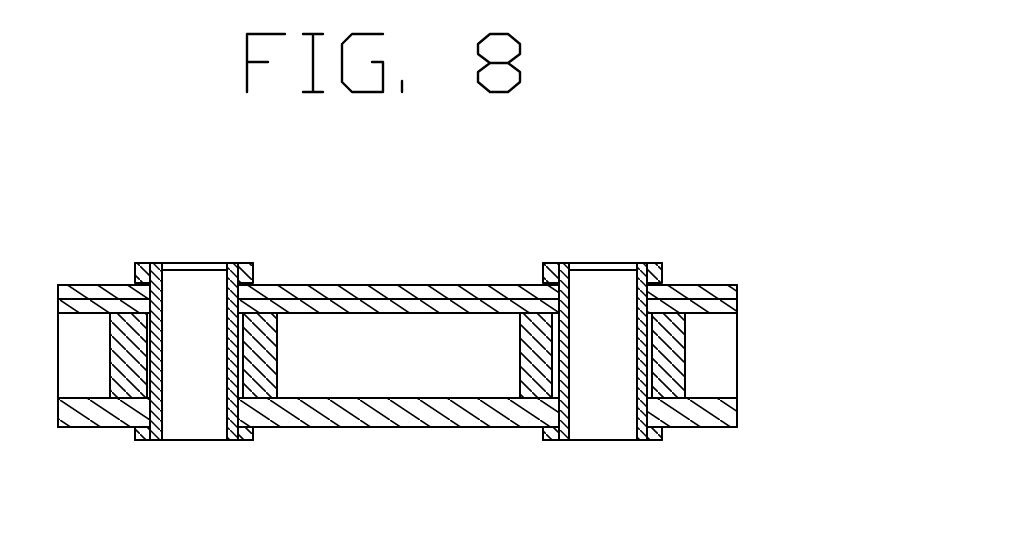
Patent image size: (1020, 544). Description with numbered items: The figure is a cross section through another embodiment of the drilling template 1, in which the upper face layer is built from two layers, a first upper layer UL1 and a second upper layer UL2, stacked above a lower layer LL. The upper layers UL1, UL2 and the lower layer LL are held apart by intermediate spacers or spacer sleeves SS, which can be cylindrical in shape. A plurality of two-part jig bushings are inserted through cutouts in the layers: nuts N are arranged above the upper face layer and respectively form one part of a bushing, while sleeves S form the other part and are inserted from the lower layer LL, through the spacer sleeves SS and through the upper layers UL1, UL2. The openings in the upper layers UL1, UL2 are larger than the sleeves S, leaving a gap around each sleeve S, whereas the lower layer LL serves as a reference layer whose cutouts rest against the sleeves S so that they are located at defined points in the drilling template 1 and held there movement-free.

The drilling template 1 is at (792, 195).
The nut N is at (138, 264).
The sleeve S is at (140, 440).
The spacer sleeve SS is at (277, 375).
The first upper layer UL1 is at (737, 290).
The second upper layer UL2 is at (737, 305).
The lower layer LL is at (737, 410).